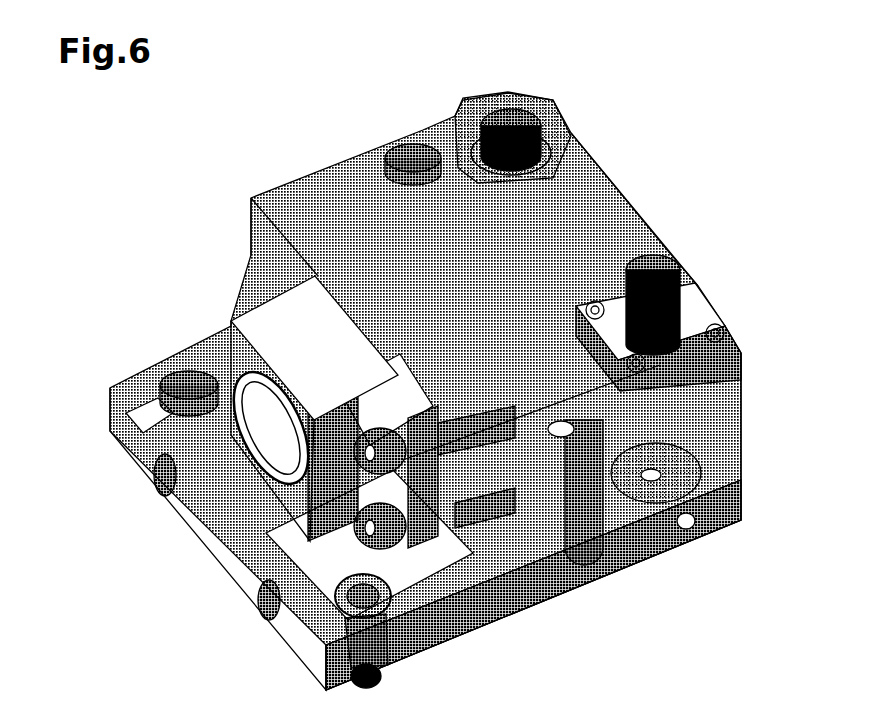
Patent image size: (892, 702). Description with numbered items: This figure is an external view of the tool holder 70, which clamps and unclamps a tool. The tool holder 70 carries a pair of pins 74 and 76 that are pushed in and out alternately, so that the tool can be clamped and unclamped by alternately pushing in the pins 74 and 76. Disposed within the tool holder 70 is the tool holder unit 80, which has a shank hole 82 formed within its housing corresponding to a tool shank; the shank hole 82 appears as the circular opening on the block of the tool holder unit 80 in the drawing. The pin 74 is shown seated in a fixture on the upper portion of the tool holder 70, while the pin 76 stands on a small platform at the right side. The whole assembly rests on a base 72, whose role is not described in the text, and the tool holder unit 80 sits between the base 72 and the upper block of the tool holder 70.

The tool holder 70 is at (440, 369).
The base plate 72 is at (492, 588).
The pin 74 is at (510, 117).
The pin 76 is at (668, 262).
The tool holder unit 80 is at (240, 332).
The shank hole 82 is at (222, 378).